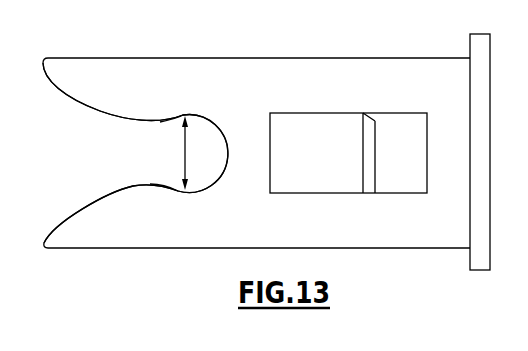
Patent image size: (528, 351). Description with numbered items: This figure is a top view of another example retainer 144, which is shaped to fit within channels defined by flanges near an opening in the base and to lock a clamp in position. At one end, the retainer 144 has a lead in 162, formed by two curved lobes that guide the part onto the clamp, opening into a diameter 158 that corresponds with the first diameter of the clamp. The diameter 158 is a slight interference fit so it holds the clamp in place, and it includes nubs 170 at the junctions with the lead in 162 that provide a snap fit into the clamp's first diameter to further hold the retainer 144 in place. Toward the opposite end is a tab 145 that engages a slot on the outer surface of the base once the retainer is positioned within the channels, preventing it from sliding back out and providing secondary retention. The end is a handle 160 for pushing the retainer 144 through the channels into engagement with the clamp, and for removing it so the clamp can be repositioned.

The retainer 144 is at (212, 261).
The tab 145 is at (370, 182).
The diameter 158 is at (187, 114).
The handle 160 is at (480, 257).
The lead in 162 is at (83, 102).
The nubs 170 is at (158, 185).